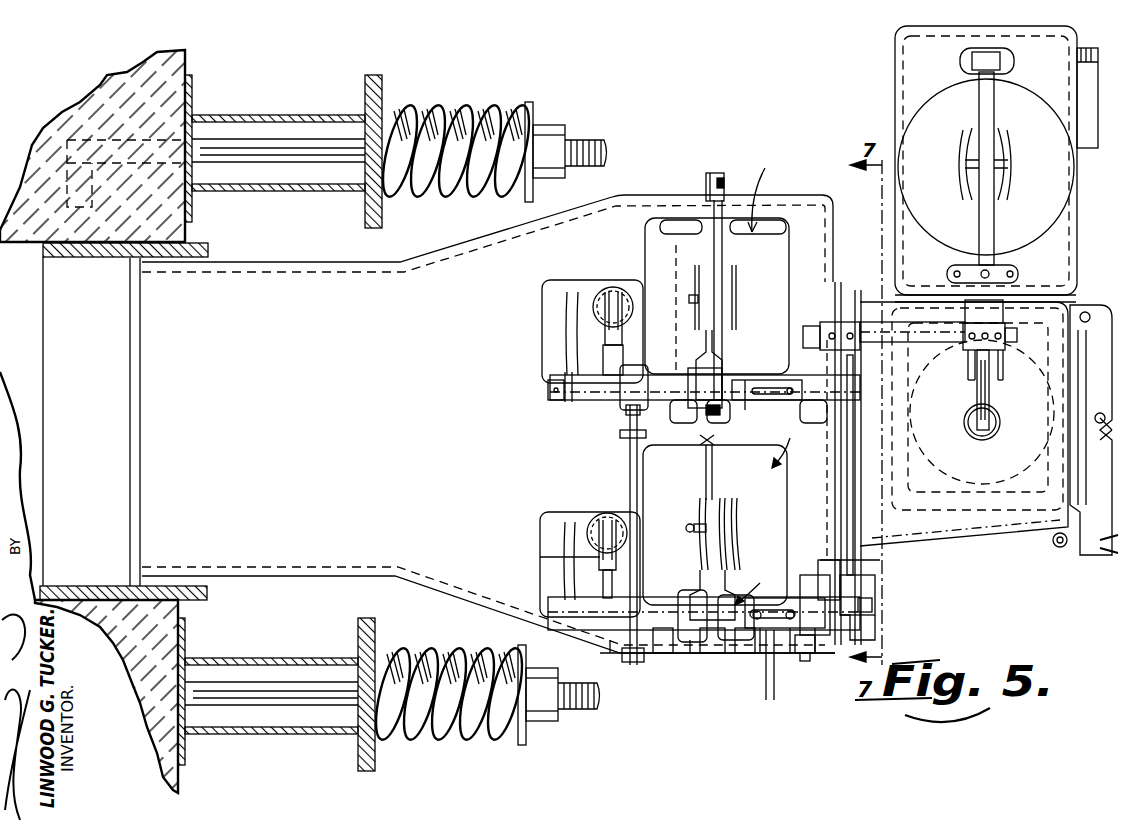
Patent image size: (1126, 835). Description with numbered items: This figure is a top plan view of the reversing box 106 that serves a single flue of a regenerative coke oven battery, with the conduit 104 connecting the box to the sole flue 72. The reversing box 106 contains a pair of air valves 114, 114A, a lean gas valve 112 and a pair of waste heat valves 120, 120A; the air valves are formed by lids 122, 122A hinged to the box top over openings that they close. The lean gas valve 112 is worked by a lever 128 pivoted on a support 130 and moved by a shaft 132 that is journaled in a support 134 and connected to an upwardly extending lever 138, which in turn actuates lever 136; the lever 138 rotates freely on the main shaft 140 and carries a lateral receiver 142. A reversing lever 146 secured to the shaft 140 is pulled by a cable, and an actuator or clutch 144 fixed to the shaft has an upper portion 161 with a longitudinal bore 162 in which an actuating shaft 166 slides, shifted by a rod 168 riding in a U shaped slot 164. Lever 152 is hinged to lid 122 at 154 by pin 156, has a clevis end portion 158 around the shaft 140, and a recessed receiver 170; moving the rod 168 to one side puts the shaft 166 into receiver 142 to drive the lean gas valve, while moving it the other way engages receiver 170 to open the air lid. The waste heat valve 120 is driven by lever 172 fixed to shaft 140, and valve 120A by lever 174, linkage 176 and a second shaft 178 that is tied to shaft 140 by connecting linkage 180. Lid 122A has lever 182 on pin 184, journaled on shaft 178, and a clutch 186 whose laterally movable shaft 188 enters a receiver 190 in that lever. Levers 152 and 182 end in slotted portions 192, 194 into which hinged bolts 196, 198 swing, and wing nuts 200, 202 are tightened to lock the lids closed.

The sole flue 72 is at (34, 376).
The conduit 104 is at (262, 432).
The reversing box 106 is at (838, 200).
The lean gas valve 112 is at (1005, 420).
The air valve 114 is at (792, 444).
The air valve 114A is at (778, 188).
The waste heat valve 120 is at (607, 513).
The waste gas valve 120A is at (613, 292).
The air lid 122 is at (778, 531).
The air lid 122A is at (786, 267).
The lever 128 is at (985, 393).
The support 130 is at (1010, 295).
The shaft 132 is at (940, 340).
The support 134 is at (855, 318).
The lever 136 is at (848, 440).
The lever 138 is at (880, 575).
The shaft 140 is at (662, 597).
The lateral receiver 142 is at (874, 610).
The actuator or clutch 144 is at (790, 590).
The reversing lever 146 is at (774, 692).
The lever 152 is at (726, 570).
The hinge point 154 is at (727, 520).
The pin 156 is at (686, 528).
The clevis end portion 158 is at (688, 652).
The upper portion of actuator 161 is at (788, 612).
The longitudinal bore 162 is at (722, 645).
The U shaped slotted portion 164 is at (752, 648).
The actuating shaft 166 is at (872, 595).
The rod 168 is at (800, 653).
The recessed receiver 170 is at (755, 587).
The lever 172 is at (540, 557).
The lever 174 is at (620, 355).
The linkage 176 is at (622, 400).
The shaft 178 is at (657, 376).
The connecting linkage 180 is at (630, 461).
The lever 182 is at (724, 320).
The pin 184 is at (736, 300).
The clutch 186 is at (770, 400).
The laterally movable shaft 188 is at (746, 380).
The receiver 190 is at (722, 380).
The slotted end portion 192 is at (706, 430).
The slotted end portion 194 is at (718, 173).
The bolt 196 is at (715, 445).
The bolt 198 is at (706, 186).
The wing nut 200 is at (706, 445).
The wing nut 202 is at (724, 185).